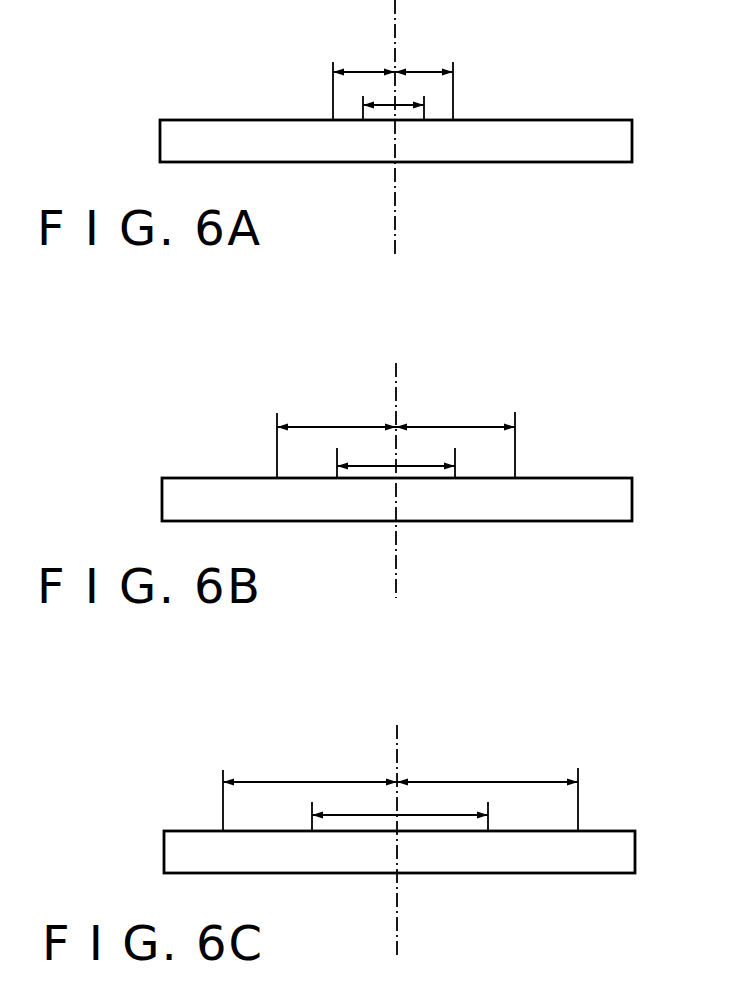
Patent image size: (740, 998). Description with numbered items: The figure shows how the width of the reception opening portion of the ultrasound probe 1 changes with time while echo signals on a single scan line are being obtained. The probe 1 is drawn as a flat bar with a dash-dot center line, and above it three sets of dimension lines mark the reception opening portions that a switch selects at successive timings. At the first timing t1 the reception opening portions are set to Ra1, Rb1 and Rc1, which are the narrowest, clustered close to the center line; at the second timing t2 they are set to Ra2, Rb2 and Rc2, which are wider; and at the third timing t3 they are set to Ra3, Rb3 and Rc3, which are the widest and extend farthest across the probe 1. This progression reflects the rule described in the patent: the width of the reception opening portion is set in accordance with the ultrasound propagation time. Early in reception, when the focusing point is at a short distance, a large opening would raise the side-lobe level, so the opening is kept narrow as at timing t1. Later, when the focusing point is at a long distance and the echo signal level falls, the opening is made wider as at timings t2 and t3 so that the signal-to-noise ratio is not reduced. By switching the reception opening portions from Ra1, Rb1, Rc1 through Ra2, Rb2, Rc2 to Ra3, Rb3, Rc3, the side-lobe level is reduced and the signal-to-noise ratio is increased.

In FIG. 6A, the ultrasound probe 1 is at (632, 136).
In FIG. 6B, the ultrasound probe 1 is at (632, 491).
In FIG. 6C, the ultrasound probe 1 is at (635, 849).
In FIG. 6A, the reception opening portion Ra1 is at (365, 77).
In FIG. 6A, the reception opening portion Rb1 is at (400, 104).
In FIG. 6A, the reception opening portion Rc1 is at (425, 77).
In FIG. 6A, the timing t1 is at (177, 75).
In FIG. 6B, the reception opening portion Ra2 is at (336, 438).
In FIG. 6B, the reception opening portion Rb2 is at (396, 458).
In FIG. 6B, the reception opening portion Rc2 is at (455, 437).
In FIG. 6B, the timing t2 is at (177, 440).
In FIG. 6C, the reception opening portion Ra3 is at (310, 792).
In FIG. 6C, the reception opening portion Rb3 is at (400, 808).
In FIG. 6C, the reception opening portion Rc3 is at (487, 791).
In FIG. 6C, the timing t3 is at (177, 793).